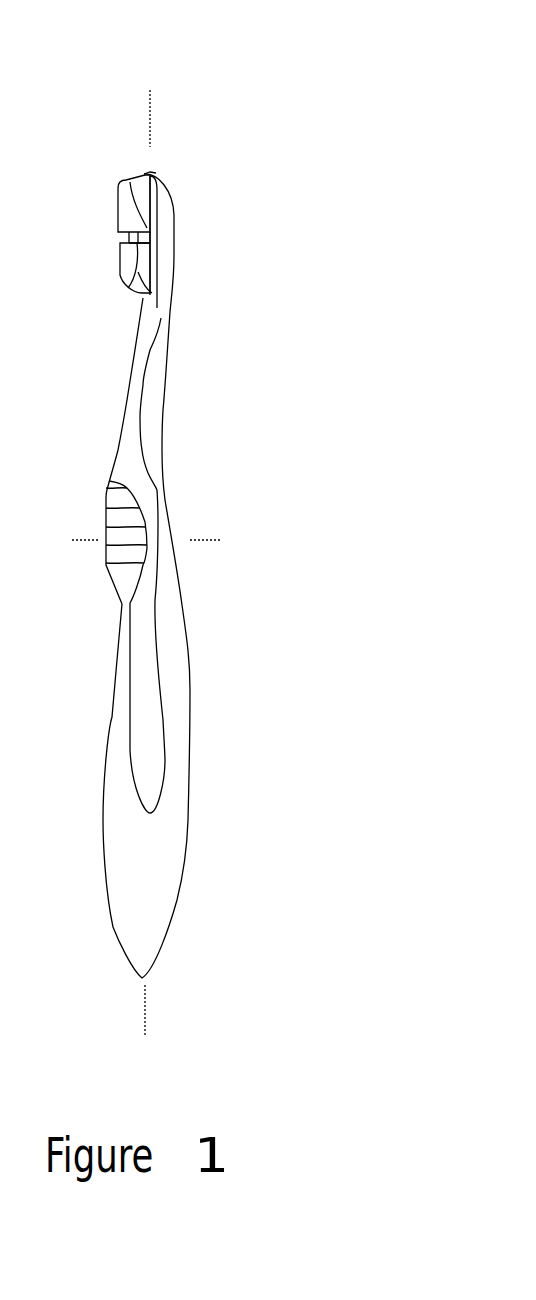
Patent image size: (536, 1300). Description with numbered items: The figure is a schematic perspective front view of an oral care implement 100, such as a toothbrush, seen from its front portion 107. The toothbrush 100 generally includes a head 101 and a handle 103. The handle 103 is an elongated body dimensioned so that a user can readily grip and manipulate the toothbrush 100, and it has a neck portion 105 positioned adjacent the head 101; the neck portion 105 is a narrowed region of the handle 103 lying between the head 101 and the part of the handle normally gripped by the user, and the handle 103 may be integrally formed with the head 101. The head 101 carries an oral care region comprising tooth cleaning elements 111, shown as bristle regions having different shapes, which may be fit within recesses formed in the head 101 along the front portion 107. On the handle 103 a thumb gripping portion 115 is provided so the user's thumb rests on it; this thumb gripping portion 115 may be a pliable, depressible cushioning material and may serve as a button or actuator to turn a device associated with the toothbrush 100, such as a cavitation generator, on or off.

The oral care implement 100 is at (271, 78).
The head 101 is at (173, 212).
The handle 103 is at (190, 712).
The neck portion 105 is at (157, 410).
The front portion 107 is at (150, 176).
The tooth cleaning elements 111 is at (127, 257).
The thumb gripping portion 115 is at (118, 510).